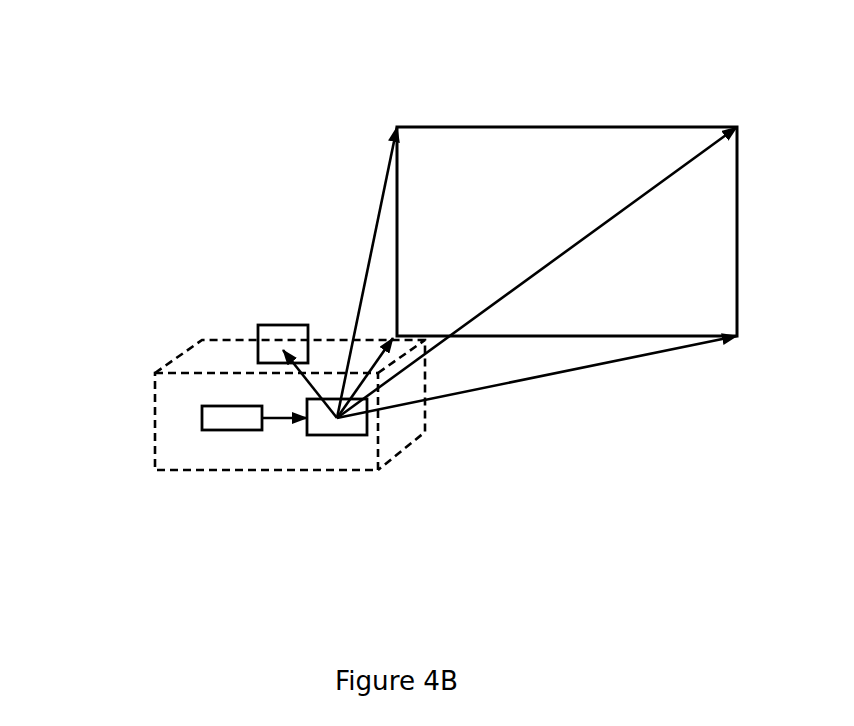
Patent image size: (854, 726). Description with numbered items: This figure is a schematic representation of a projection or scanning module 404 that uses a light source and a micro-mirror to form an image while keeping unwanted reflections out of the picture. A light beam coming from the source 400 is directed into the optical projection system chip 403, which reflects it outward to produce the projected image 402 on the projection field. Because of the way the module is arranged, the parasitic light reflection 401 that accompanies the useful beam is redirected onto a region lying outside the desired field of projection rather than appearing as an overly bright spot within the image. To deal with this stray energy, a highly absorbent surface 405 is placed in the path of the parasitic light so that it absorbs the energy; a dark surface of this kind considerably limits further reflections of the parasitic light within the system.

The light source 400 is at (217, 419).
The parasitic light spot 401 is at (300, 352).
The projected image 402 is at (662, 138).
The optical projection system chip 403 is at (362, 423).
The projection or scanning module 404 is at (155, 452).
The highly absorbent surface 405 is at (272, 327).